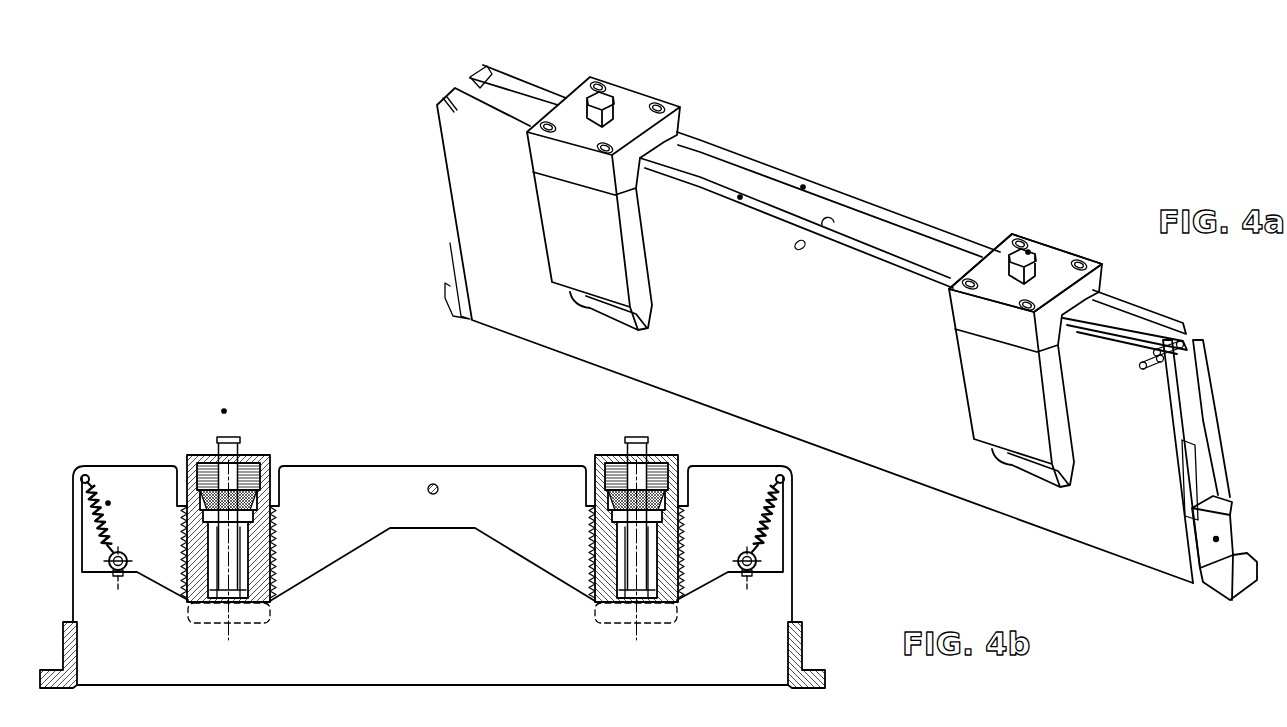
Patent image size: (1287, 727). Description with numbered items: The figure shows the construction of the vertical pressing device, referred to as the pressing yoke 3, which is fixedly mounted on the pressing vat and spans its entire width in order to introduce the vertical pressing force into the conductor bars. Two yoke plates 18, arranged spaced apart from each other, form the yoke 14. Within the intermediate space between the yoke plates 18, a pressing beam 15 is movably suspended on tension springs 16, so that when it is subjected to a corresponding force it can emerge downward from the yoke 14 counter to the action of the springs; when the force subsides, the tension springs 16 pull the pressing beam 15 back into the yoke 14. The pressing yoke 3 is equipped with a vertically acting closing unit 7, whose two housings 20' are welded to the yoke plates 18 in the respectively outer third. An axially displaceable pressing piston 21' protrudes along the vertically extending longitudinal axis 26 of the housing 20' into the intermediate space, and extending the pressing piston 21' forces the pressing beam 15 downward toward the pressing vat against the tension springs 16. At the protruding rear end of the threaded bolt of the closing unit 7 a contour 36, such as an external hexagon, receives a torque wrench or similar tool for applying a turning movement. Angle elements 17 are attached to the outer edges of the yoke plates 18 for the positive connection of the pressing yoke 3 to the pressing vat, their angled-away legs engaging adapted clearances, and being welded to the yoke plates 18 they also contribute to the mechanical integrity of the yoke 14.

In FIG. 4a, the pressing yoke 3 is at (789, 346).
In FIG. 4a, the closing unit 7 is at (1010, 235).
In FIG. 4a, the yoke 14 is at (885, 196).
In FIG. 4b, the pressing beam 15 is at (514, 623).
In FIG. 4b, the tension springs 16 is at (108, 503).
In FIG. 4a, the angle elements 17 is at (1216, 539).
In FIG. 4a, the yoke plates 18 is at (803, 187).
In FIG. 4b, the yoke plates 18 is at (514, 505).
In FIG. 4a, the housing 20' is at (814, 282).
In FIG. 4b, the pressing piston 21' is at (432, 491).
In FIG. 4b, the longitudinal axis 26 is at (224, 411).
In FIG. 4a, the contour 36 is at (1028, 252).